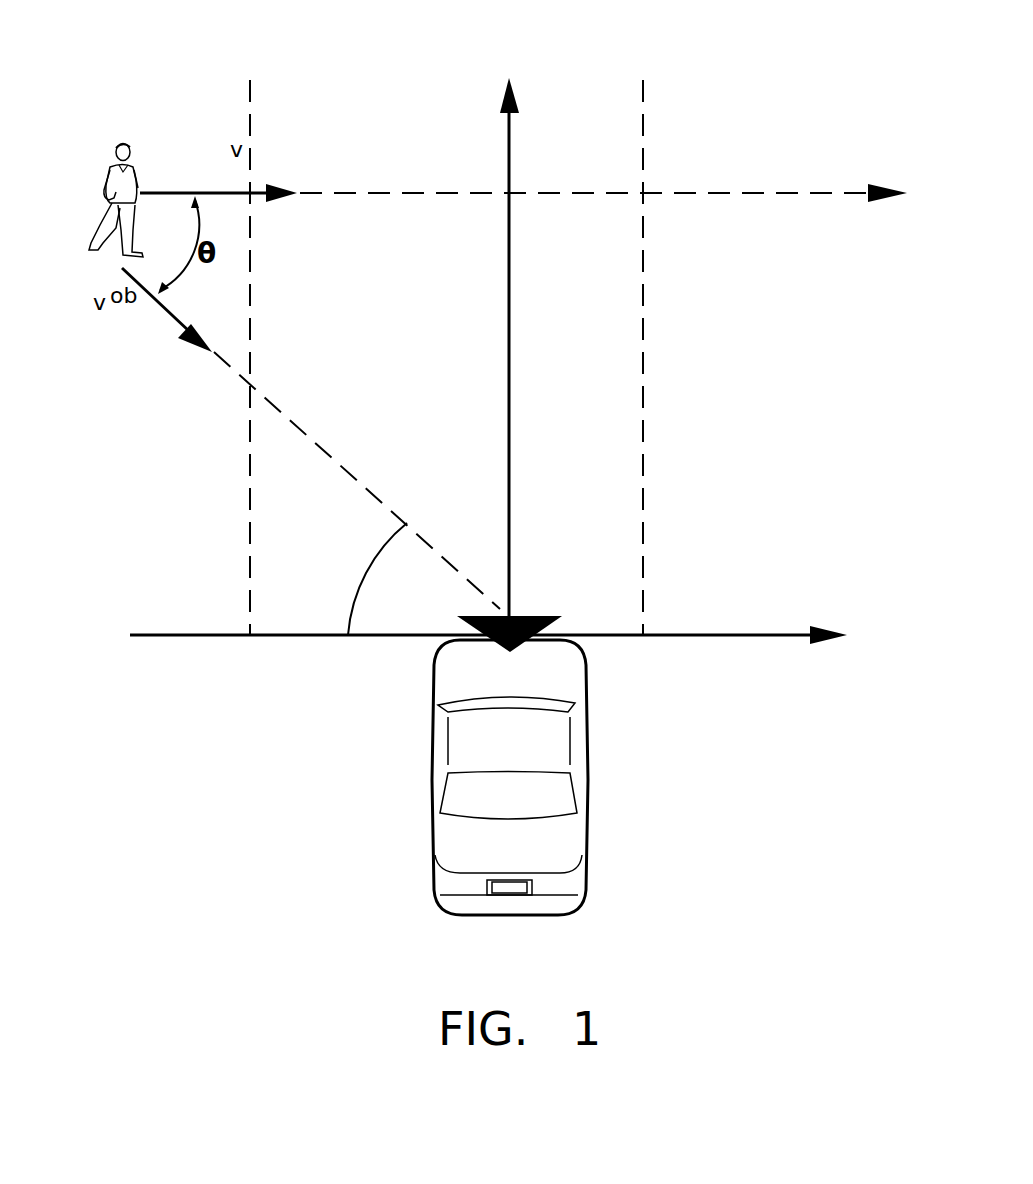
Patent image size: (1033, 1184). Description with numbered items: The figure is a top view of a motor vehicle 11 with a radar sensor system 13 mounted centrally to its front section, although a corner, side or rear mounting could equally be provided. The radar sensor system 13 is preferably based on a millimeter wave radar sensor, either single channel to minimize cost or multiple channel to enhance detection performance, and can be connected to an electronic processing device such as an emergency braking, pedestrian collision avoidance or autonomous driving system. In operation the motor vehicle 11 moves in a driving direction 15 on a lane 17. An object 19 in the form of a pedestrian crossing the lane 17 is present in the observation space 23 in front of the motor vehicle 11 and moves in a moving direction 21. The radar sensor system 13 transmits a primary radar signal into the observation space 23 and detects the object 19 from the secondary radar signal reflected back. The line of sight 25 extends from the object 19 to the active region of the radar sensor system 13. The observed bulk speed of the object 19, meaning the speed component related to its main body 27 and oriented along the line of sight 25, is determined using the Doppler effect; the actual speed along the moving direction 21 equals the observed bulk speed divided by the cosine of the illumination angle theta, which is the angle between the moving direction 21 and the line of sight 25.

The motor vehicle 11 is at (587, 740).
The radar sensor system 13 is at (537, 617).
The driving direction 15 is at (512, 140).
The lane 17 is at (645, 118).
The object 19 is at (112, 168).
The moving direction 21 is at (808, 192).
The observation space 23 is at (702, 385).
The line of sight 25 is at (348, 635).
The main body 27 is at (137, 170).